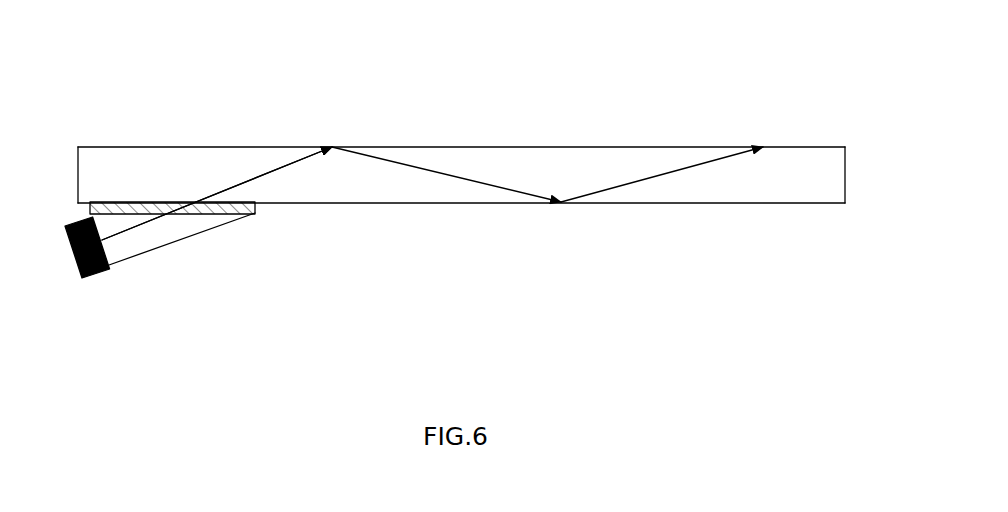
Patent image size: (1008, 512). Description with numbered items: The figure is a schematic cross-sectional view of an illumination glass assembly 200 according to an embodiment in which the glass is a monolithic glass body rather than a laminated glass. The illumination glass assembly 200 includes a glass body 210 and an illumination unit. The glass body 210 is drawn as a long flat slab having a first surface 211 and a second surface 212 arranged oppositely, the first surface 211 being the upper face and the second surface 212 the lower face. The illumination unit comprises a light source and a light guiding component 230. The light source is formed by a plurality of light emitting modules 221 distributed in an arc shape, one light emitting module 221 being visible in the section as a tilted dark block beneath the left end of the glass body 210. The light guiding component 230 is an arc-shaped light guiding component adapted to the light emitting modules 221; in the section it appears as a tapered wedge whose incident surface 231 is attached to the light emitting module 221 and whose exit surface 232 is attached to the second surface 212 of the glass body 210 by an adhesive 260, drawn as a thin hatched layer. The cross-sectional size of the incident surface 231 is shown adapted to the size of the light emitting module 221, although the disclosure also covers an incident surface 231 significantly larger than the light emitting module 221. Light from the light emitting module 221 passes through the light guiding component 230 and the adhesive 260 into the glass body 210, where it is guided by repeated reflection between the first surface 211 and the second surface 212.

The illumination glass assembly 200 is at (480, 53).
The glass body 210 is at (461, 182).
The first surface 211 is at (593, 146).
The second surface 212 is at (607, 203).
The adhesive 260 is at (257, 208).
The light emitting module 221 is at (100, 278).
The light guiding component 230 is at (432, 245).
The incident surface 231 is at (108, 245).
The exit surface 232 is at (210, 215).